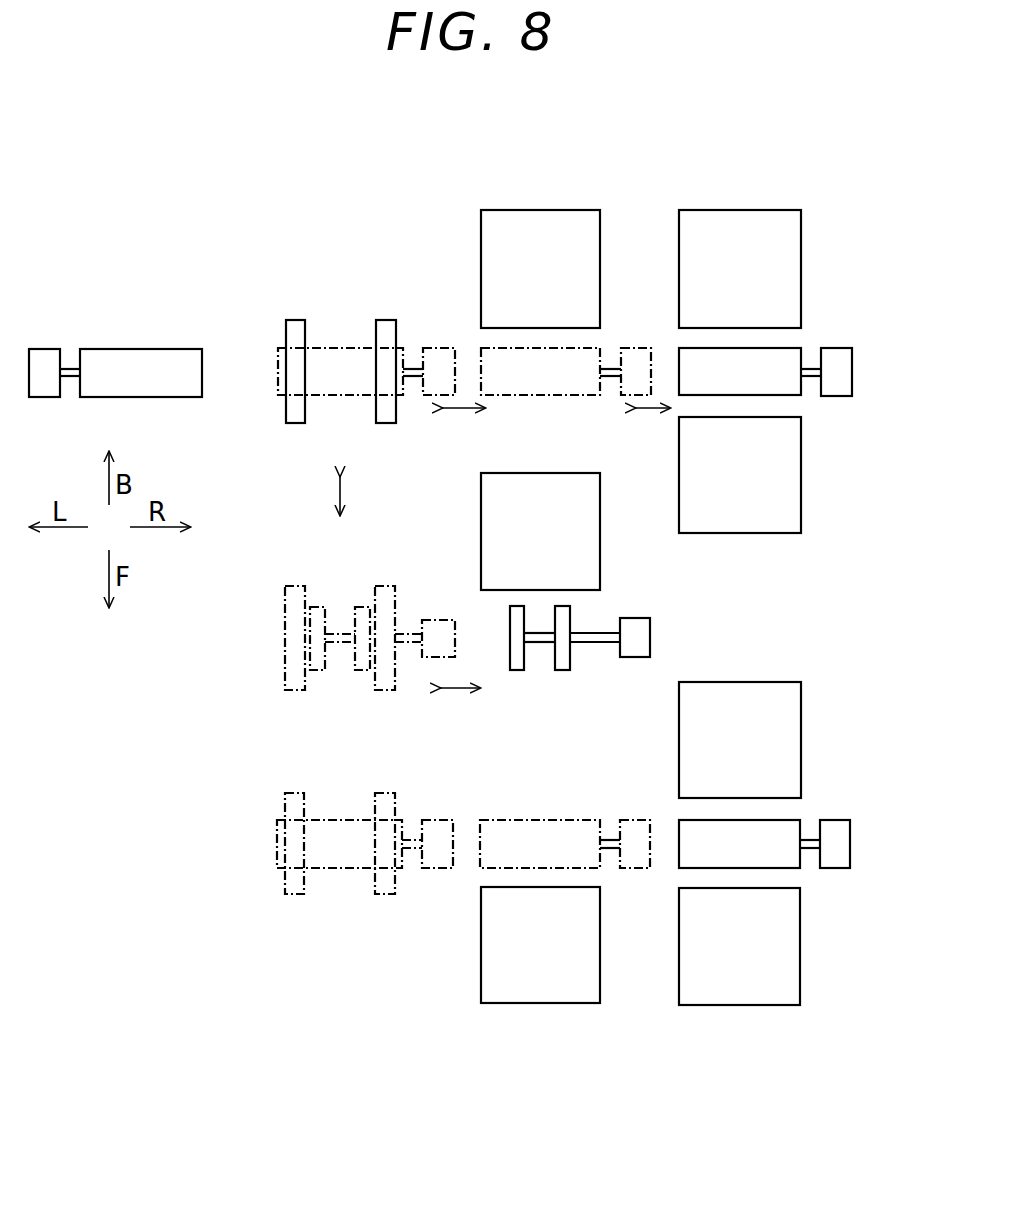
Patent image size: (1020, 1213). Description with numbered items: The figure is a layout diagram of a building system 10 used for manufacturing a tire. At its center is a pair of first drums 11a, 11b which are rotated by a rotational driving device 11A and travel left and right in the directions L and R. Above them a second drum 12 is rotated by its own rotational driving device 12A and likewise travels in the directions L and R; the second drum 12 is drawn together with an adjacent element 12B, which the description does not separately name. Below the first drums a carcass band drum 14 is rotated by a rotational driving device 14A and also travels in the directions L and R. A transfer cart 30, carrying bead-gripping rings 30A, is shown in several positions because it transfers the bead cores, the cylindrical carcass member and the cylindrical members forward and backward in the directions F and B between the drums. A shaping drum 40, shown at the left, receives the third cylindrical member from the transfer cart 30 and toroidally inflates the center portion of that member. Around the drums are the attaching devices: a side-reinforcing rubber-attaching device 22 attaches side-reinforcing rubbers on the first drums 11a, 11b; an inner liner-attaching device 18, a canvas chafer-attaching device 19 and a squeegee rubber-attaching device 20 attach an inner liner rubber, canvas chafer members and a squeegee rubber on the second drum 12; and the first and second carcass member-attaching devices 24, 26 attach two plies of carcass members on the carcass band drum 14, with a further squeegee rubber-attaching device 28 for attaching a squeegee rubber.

The building system 10 is at (413, 282).
The shaping drum 40 is at (137, 348).
The transfer cart 30 is at (291, 430).
The bead-gripping rings 30A is at (298, 320).
The squeegee rubber-attaching device 20 is at (539, 208).
The inner liner-attaching device 18 is at (740, 209).
The side-reinforcing rubber-attaching device 22 is at (481, 535).
The canvas chafer-attaching device 19 is at (742, 534).
The second carcass member-attaching device 26 is at (679, 740).
The squeegee rubber-attaching device 28 is at (538, 1004).
The first carcass member-attaching device 24 is at (742, 1006).
The second drum 12 is at (782, 348).
The rotational driving device 12A is at (841, 349).
The conveyor guide 12B is at (790, 397).
The carcass band drum 14 is at (795, 819).
The rotational driving device 14A is at (836, 870).
The rotational driving device 11A is at (637, 637).
The first drum 11a is at (517, 672).
The first drum 11b is at (562, 672).